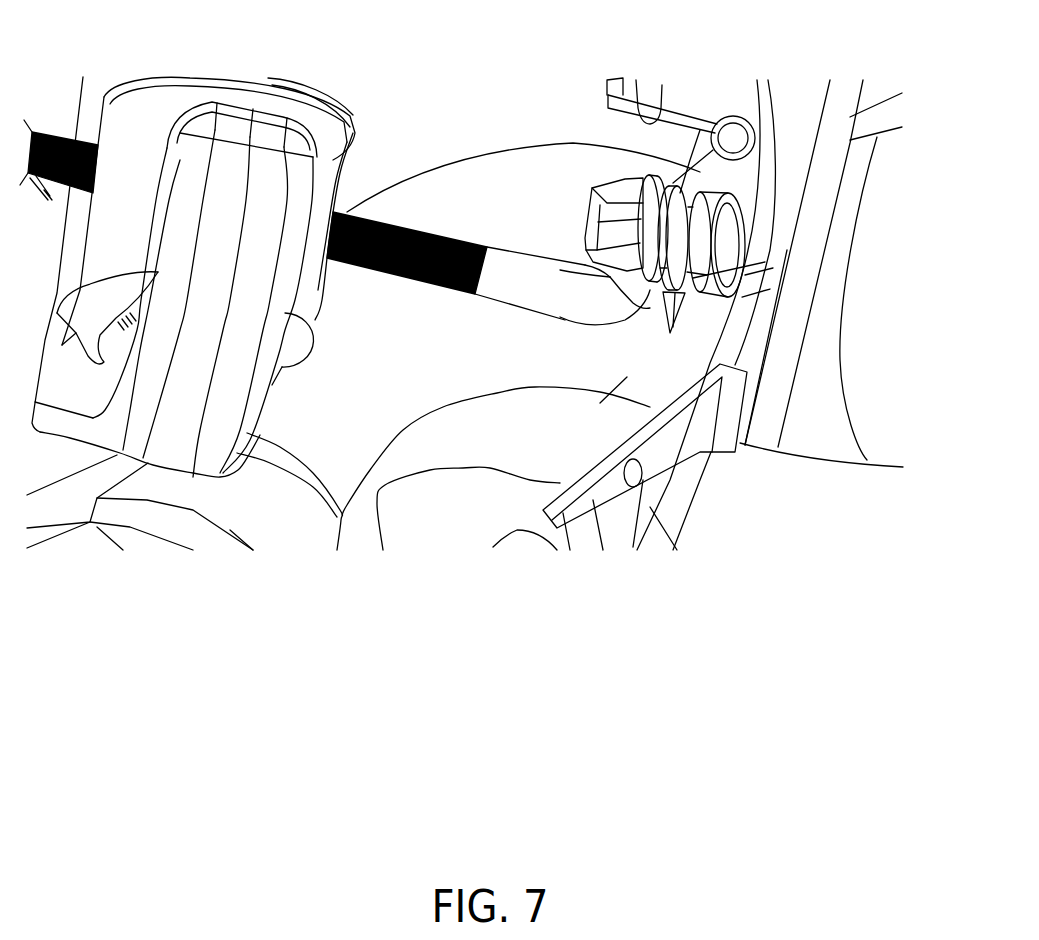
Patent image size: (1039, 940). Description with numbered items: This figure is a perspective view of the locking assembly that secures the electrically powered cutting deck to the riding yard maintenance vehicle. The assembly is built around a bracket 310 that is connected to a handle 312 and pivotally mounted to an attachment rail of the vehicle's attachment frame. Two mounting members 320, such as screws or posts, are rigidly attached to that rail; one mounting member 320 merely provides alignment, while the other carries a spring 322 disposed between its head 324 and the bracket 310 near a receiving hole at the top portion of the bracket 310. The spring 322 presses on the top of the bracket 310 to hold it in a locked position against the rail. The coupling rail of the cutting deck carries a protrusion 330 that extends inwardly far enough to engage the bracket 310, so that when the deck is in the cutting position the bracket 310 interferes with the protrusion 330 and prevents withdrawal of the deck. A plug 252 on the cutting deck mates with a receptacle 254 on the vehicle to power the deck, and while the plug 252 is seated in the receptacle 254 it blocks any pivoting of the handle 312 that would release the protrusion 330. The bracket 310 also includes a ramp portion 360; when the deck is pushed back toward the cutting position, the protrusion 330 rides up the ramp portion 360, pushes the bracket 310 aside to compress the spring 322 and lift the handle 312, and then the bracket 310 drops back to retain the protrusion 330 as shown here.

The plug 252 is at (197, 193).
The receptacle 254 is at (343, 97).
The bracket 310 is at (718, 330).
The handle 312 is at (388, 222).
The mounting member 320 is at (670, 222).
The spring 322 is at (712, 222).
The head 324 is at (622, 202).
The protrusion 330 is at (680, 308).
The ramp portion 360 is at (607, 488).